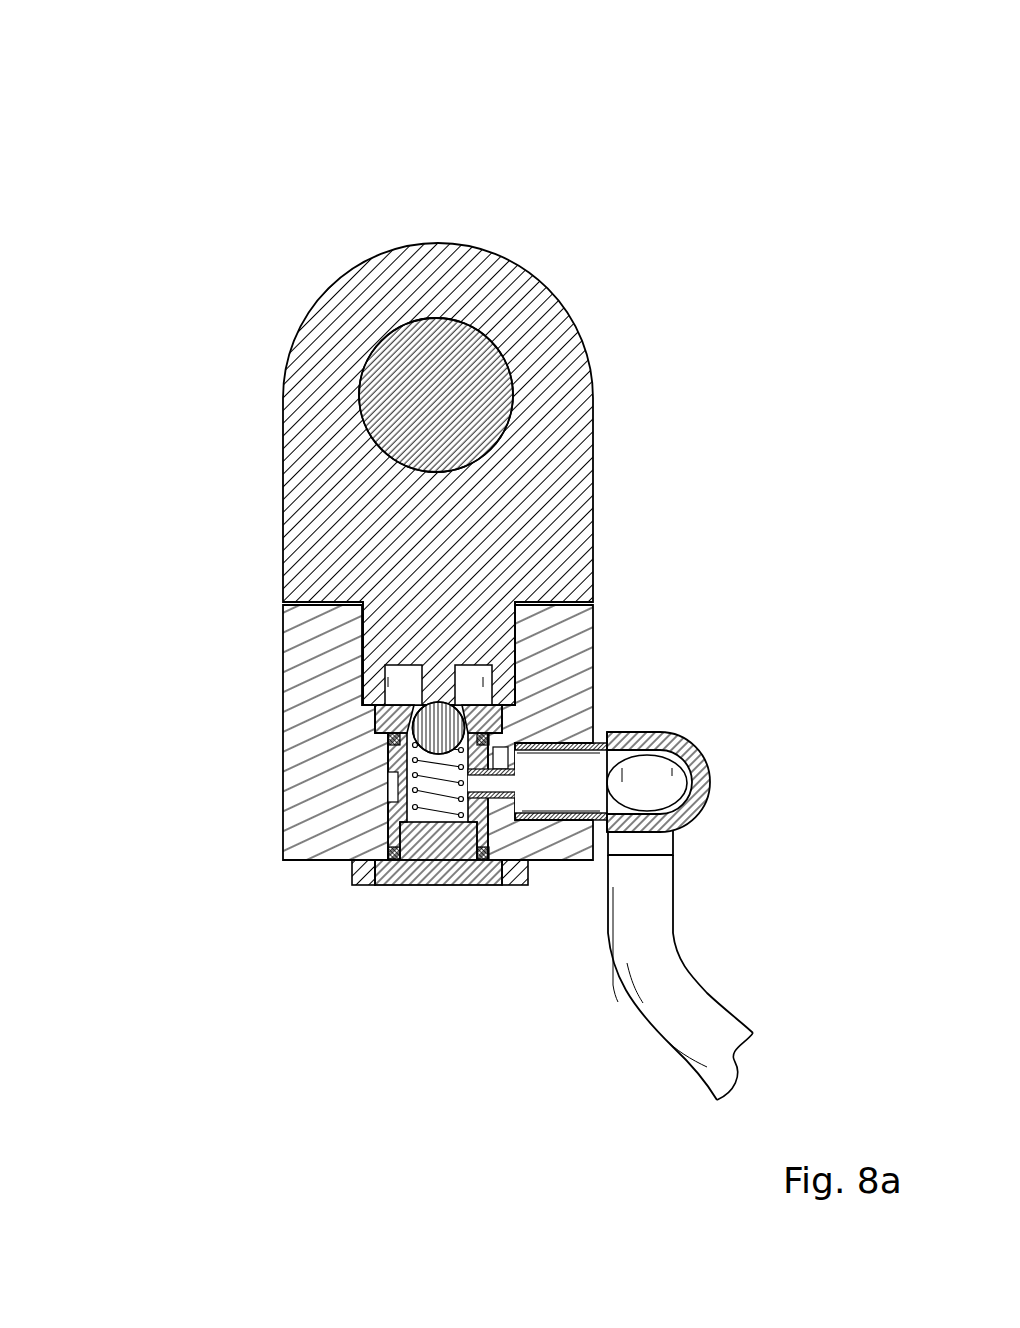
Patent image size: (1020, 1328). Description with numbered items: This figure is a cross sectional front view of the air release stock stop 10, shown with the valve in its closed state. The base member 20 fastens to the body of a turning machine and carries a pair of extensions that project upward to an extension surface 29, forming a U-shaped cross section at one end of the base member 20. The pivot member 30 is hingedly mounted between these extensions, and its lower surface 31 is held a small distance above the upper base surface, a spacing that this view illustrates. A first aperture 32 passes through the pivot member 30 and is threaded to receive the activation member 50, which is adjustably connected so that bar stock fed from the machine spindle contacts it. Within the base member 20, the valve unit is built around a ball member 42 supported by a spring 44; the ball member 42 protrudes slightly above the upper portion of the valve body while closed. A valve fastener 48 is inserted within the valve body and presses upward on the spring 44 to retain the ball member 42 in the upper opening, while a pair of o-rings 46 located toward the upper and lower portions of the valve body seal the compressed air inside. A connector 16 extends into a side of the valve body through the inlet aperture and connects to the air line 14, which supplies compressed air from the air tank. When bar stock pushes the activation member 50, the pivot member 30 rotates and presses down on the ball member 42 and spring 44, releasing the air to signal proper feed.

The air release stock stop 10 is at (445, 130).
The air line 14 is at (672, 985).
The connector 16 is at (693, 747).
The base member 20 is at (270, 828).
The extension surface 29 is at (287, 647).
The pivot member 30 is at (520, 252).
The lower surface 31 is at (330, 597).
The first aperture 32 is at (397, 323).
The ball member 42 is at (375, 708).
The spring 44 is at (500, 887).
The o-rings 46 is at (388, 738).
The valve fastener 48 is at (440, 886).
The activation member 50 is at (394, 382).